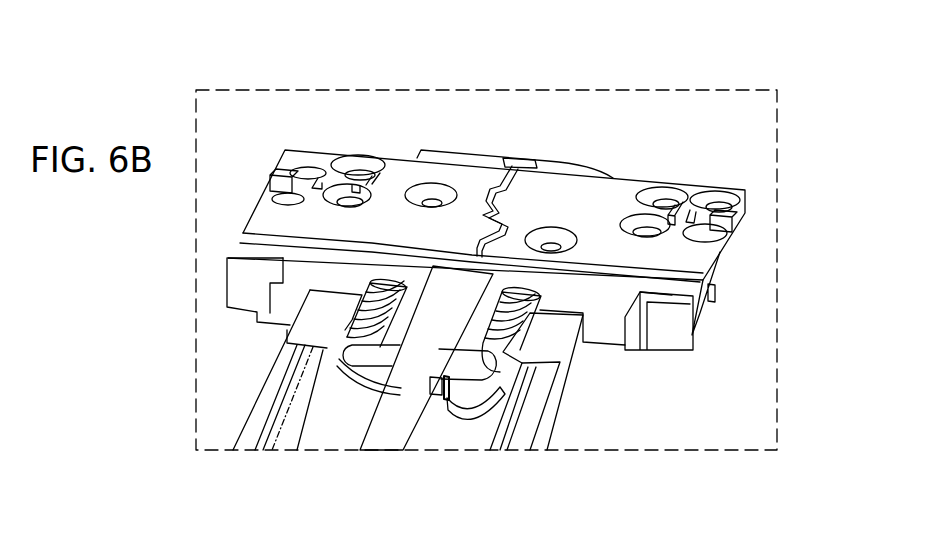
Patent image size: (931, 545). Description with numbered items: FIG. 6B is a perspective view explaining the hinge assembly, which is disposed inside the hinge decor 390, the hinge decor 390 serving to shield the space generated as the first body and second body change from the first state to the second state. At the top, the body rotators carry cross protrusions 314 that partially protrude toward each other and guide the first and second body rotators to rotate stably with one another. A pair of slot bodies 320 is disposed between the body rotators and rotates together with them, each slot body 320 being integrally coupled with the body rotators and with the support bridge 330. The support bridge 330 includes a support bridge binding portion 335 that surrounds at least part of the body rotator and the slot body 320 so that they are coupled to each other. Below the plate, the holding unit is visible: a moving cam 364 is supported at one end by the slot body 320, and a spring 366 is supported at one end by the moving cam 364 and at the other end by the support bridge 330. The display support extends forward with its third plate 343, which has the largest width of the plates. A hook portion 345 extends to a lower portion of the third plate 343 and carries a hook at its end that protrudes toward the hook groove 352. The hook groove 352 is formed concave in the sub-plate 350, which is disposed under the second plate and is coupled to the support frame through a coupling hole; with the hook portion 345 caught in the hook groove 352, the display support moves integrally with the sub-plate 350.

The cross protrusion 314 is at (465, 203).
The slot body 320 is at (703, 327).
The support bridge 330 is at (567, 377).
The support bridge binding portion 335 is at (667, 338).
The third plate 343 is at (370, 364).
The hook portion 345 is at (436, 392).
The sub-plate 350 is at (470, 392).
The hook groove 352 is at (447, 402).
The moving cam 364 is at (283, 278).
The spring 366 is at (290, 323).
The hinge decor 390 is at (332, 420).